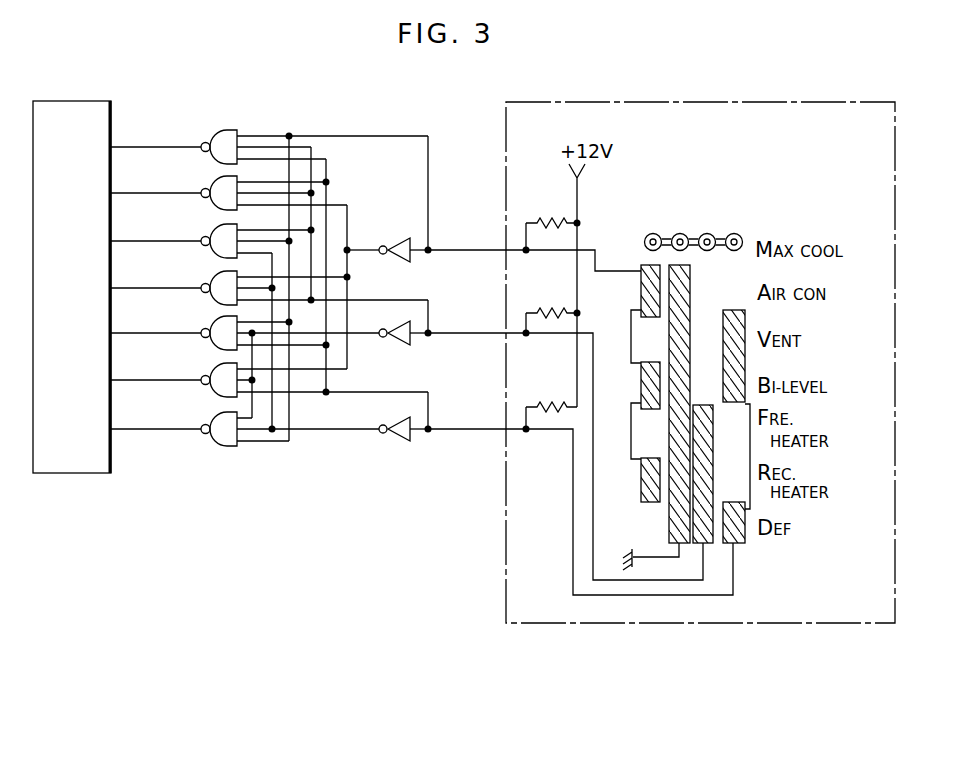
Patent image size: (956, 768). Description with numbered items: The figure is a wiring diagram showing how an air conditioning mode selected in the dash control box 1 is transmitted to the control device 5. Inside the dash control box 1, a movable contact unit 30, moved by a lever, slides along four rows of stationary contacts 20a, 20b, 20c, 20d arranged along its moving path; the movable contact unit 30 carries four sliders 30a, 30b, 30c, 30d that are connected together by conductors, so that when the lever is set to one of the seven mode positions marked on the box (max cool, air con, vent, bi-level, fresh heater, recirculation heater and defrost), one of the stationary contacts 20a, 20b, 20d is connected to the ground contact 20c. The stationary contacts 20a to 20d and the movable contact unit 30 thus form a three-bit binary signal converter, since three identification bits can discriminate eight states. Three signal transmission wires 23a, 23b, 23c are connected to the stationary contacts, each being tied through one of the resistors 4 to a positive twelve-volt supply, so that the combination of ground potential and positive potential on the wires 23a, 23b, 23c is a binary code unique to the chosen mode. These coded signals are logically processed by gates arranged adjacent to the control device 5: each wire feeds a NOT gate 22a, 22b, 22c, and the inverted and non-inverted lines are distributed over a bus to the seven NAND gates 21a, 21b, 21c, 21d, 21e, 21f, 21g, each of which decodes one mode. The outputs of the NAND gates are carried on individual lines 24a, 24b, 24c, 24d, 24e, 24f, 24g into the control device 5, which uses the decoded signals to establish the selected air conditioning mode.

The dash control box 1 is at (501, 536).
The resistors 4 is at (548, 222).
The control device 5 is at (82, 474).
The stationary contact 20a is at (735, 546).
The stationary contact 20b is at (706, 545).
The ground contact 20c is at (669, 522).
The stationary contact 20d is at (641, 468).
The NAND gate 21a is at (218, 133).
The NAND gate 21b is at (214, 182).
The NAND gate 21c is at (214, 227).
The NAND gate 21d is at (215, 274).
The NAND gate 21e is at (215, 319).
The NAND gate 21f is at (214, 366).
The NAND gate 21g is at (216, 415).
The NOT gate 22a is at (387, 243).
The NOT gate 22b is at (395, 344).
The NOT gate 22c is at (388, 442).
The signal transmission wire 23a is at (461, 248).
The signal transmission wire 23b is at (462, 333).
The signal transmission wire 23c is at (464, 429).
The output line 24a is at (144, 147).
The output line 24b is at (144, 193).
The output line 24c is at (140, 241).
The output line 24d is at (138, 288).
The output line 24e is at (138, 333).
The output line 24f is at (140, 380).
The output line 24g is at (134, 429).
The movable contact unit 30 is at (688, 222).
The slider 30a is at (741, 234).
The slider 30b is at (707, 233).
The slider 30c is at (680, 233).
The slider 30d is at (653, 233).